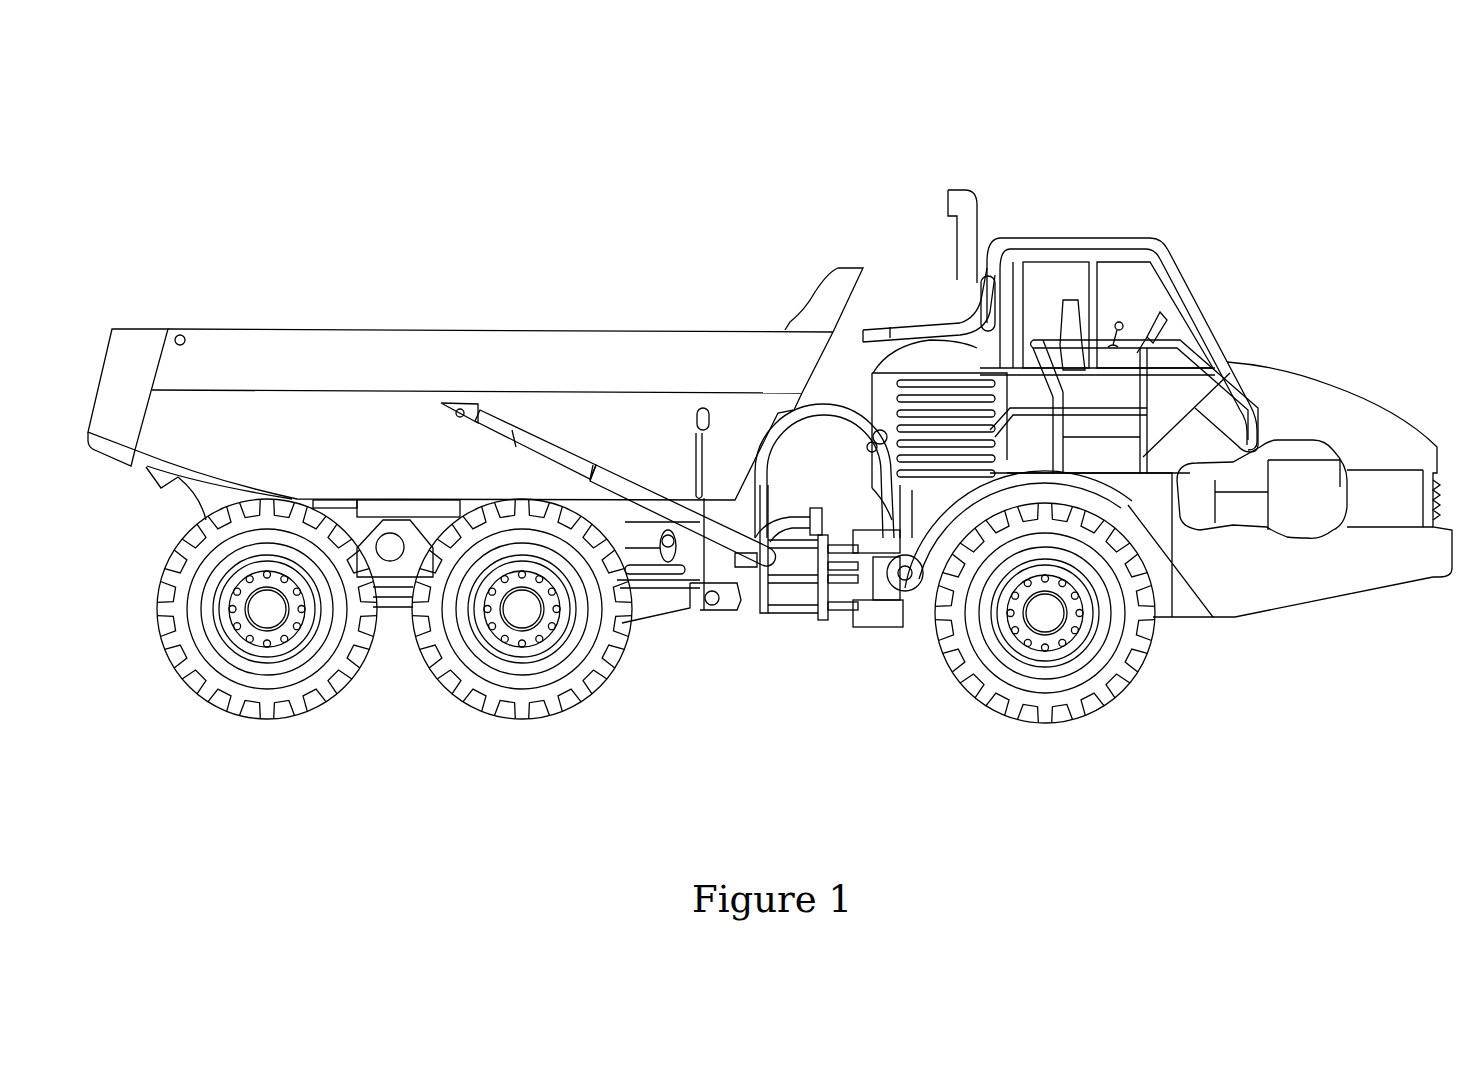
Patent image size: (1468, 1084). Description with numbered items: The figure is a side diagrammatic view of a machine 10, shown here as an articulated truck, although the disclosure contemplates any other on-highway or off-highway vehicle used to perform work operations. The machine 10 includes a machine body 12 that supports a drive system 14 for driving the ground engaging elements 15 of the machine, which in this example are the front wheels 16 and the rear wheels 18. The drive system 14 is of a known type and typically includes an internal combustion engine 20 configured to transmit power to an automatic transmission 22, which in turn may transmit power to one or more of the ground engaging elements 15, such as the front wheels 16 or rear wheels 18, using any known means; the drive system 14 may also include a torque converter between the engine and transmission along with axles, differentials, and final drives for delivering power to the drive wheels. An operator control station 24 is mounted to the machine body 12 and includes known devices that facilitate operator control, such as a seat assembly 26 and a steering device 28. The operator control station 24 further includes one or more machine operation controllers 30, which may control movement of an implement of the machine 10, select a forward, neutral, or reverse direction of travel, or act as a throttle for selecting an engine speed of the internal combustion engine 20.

The machine 10 is at (1210, 126).
The machine body 12 is at (686, 607).
The drive system 14 is at (1264, 544).
The ground engaging elements 15 is at (374, 764).
The front wheels 16 is at (1003, 694).
The rear wheels 18 is at (221, 712).
The internal combustion engine 20 is at (1315, 452).
The automatic transmission 22 is at (1200, 515).
The operator control station 24 is at (1027, 237).
The seat assembly 26 is at (1070, 300).
The steering device 28 is at (1160, 312).
The machine operation controller 30 is at (1122, 325).